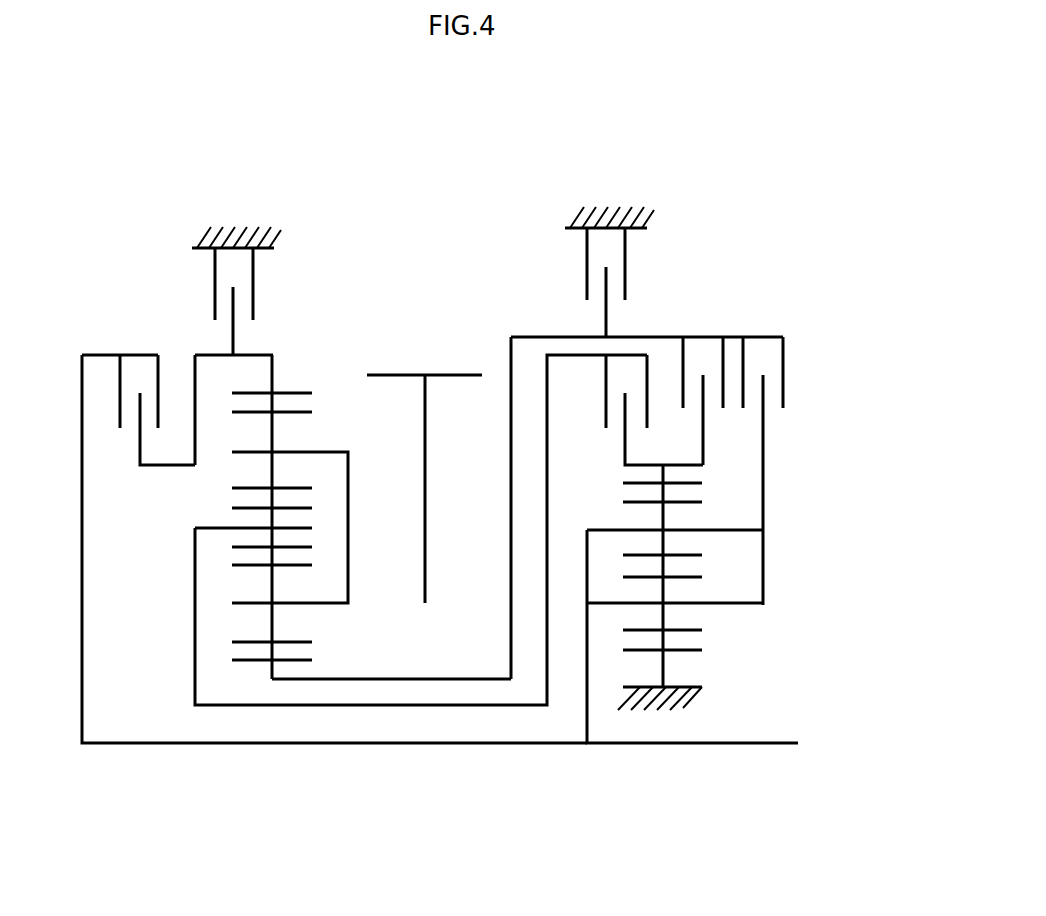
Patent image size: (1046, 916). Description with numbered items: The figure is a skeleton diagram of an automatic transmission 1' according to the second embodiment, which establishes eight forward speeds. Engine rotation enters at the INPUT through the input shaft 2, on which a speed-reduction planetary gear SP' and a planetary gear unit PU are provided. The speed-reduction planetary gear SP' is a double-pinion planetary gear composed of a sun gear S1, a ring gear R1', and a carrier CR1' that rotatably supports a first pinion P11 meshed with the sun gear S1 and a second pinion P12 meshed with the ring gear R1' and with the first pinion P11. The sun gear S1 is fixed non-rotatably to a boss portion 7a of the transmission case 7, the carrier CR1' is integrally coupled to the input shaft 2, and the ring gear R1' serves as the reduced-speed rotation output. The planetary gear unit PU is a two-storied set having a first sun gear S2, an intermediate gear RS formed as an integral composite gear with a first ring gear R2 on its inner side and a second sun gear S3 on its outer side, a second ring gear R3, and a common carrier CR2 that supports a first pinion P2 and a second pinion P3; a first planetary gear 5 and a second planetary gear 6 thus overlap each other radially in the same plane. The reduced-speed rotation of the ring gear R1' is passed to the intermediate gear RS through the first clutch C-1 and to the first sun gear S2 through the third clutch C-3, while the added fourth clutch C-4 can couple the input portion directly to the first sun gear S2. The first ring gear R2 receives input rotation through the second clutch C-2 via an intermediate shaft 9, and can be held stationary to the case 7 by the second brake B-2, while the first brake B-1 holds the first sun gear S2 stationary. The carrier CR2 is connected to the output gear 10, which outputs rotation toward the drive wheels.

The automatic transmission 1' is at (424, 157).
The input shaft 2 is at (783, 743).
The first planetary gear 5 is at (194, 612).
The second planetary gear 6 is at (383, 437).
The transmission case 7 is at (207, 232).
The boss portion 7a is at (684, 706).
The intermediate shaft 9 is at (181, 743).
The output gear 10 is at (458, 375).
The planetary gear unit PU is at (303, 314).
The speed-reduction planetary gear SP' is at (647, 440).
The intermediate gear RS is at (191, 553).
The first clutch C-1 is at (630, 410).
The second clutch C-2 is at (138, 397).
The third clutch C-3 is at (701, 357).
The fourth clutch C-4 is at (762, 456).
The first brake B-1 is at (605, 257).
The second brake B-2 is at (234, 277).
The sun gear S1 is at (701, 647).
The first sun gear S2 is at (303, 657).
The second sun gear S3 is at (303, 499).
The ring gear R1' is at (727, 576).
The first ring gear R2 is at (302, 540).
The second ring gear R3 is at (302, 390).
The first pinion P11 is at (701, 578).
The second pinion P12 is at (701, 503).
The first pinion P2 is at (302, 567).
The second pinion P3 is at (302, 419).
The carrier CR1' is at (730, 566).
The carrier CR2 is at (388, 470).
The input INPUT is at (774, 770).